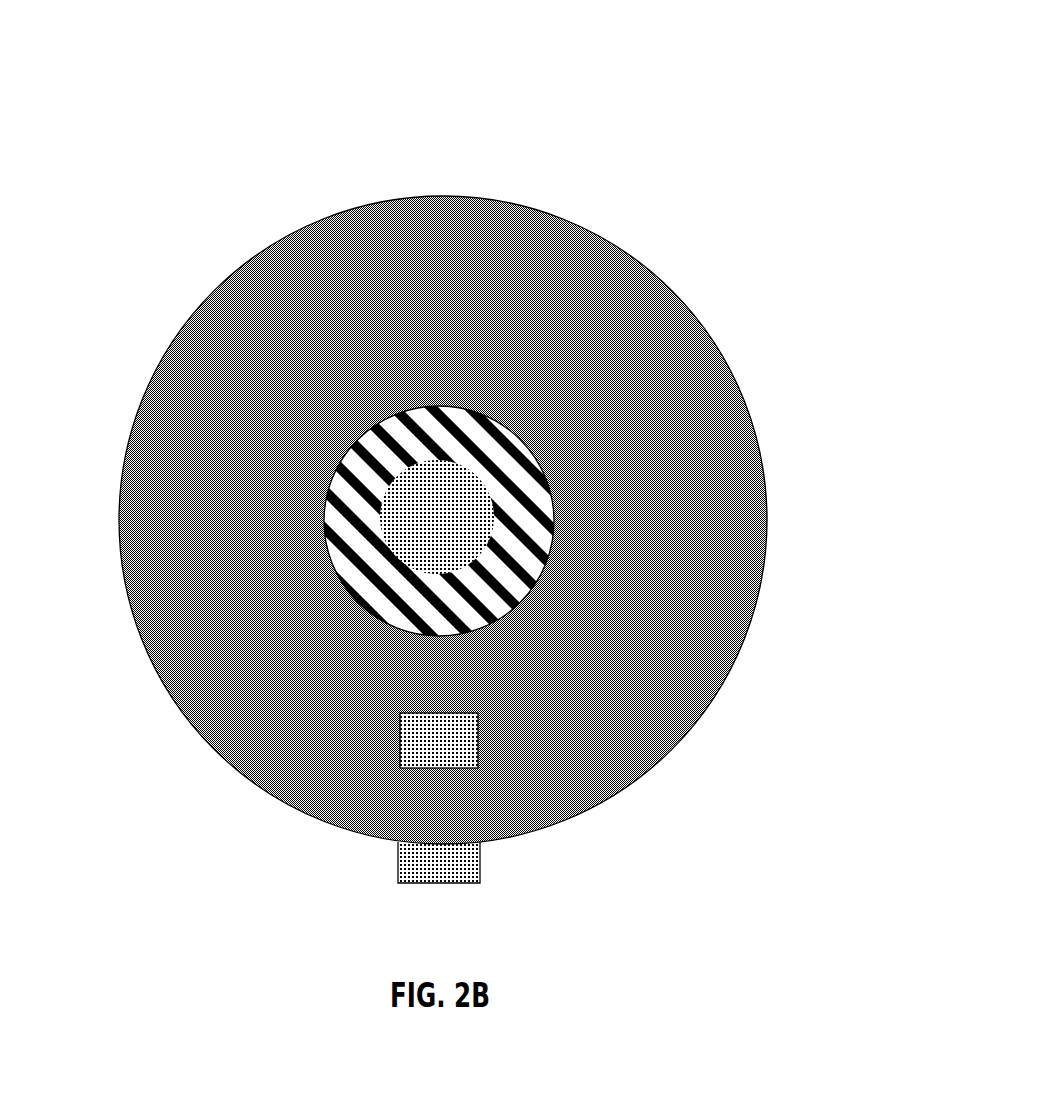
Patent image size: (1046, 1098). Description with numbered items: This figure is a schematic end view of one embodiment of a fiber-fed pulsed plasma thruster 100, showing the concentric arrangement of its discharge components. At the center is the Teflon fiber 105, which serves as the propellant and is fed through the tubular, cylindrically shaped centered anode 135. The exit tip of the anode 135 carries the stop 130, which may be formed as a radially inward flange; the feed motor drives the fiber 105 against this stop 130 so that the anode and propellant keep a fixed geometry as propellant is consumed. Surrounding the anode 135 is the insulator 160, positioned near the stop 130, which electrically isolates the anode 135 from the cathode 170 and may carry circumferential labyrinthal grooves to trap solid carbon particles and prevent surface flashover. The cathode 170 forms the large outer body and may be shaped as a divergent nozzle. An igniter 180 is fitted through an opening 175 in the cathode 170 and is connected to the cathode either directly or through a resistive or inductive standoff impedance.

The fiber-fed pulsed plasma thruster 100 is at (700, 167).
The Teflon fiber 105 is at (443, 513).
The stop 130 is at (487, 515).
The centered anode 135 is at (178, 327).
The insulator 160 is at (512, 563).
The cathode 170 is at (340, 272).
The opening 175 is at (418, 767).
The igniter 180 is at (440, 737).